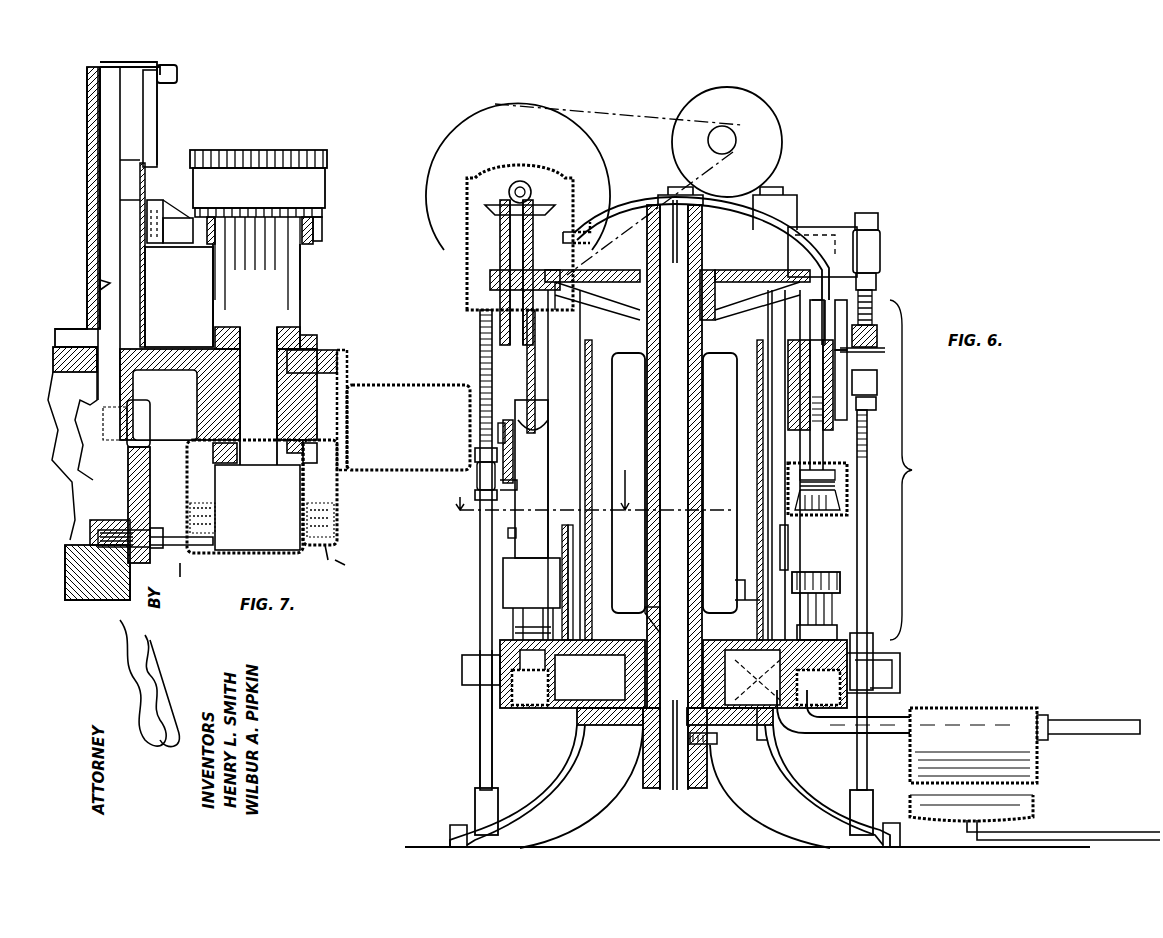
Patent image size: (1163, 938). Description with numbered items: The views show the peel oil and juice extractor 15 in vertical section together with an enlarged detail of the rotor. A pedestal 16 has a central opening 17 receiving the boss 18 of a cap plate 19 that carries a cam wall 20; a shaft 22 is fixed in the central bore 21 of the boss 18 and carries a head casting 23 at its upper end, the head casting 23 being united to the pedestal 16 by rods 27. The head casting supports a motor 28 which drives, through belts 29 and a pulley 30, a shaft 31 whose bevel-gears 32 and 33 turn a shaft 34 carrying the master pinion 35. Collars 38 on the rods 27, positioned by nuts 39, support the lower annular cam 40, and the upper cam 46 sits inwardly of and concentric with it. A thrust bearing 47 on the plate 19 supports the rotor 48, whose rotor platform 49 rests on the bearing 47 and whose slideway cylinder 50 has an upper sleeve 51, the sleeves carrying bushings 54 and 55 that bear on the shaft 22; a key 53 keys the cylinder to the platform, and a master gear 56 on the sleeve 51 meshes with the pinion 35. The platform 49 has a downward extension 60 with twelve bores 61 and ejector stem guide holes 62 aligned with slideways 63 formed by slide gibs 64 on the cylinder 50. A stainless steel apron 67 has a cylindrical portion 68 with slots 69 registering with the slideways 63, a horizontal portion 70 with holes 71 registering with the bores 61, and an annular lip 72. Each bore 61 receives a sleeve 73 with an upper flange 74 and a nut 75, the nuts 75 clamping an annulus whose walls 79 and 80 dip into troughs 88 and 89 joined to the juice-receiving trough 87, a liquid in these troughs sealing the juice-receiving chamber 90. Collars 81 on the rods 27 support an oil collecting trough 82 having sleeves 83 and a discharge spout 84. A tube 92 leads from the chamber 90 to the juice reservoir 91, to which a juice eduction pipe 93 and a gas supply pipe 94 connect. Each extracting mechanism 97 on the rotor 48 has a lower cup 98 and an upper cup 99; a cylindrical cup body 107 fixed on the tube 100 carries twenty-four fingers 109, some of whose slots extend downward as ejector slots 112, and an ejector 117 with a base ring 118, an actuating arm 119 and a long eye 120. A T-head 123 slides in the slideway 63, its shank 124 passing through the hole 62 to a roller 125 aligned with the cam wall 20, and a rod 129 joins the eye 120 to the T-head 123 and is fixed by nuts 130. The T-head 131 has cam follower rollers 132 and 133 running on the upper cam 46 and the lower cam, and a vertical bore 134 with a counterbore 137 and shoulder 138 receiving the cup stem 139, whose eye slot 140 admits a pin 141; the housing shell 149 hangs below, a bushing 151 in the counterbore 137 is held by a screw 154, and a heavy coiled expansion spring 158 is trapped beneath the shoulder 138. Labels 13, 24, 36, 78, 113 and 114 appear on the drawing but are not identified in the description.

In FIG. 6, the section line 13 is at (590, 490).
In FIG. 6, the peel oil and juice extractor 15 is at (921, 228).
In FIG. 6, the pedestal 16 is at (780, 825).
In FIG. 6, the central opening 17 is at (633, 755).
In FIG. 6, the boss 18 is at (707, 745).
In FIG. 6, the cap plate 19 is at (620, 680).
In FIG. 7, the cam wall 20 is at (128, 485).
In FIG. 6, the cam wall 20 is at (600, 690).
In FIG. 6, the central bore 21 is at (650, 785).
In FIG. 6, the shaft 22 is at (690, 512).
In FIG. 6, the head casting 23 is at (775, 230).
In FIG. 6, the mounting block 24 is at (832, 240).
In FIG. 6, the rods 27 is at (480, 606).
In FIG. 6, the motor 28 is at (768, 125).
In FIG. 6, the belts 29 is at (617, 113).
In FIG. 6, the pulley 30 is at (596, 168).
In FIG. 6, the shaft 31 is at (519, 182).
In FIG. 6, the bevel-gear 32 is at (470, 190).
In FIG. 6, the bevel-gear 33 is at (490, 213).
In FIG. 6, the shaft 34 is at (500, 255).
In FIG. 6, the master pinion 35 is at (490, 290).
In FIG. 6, the clamp 36 is at (505, 482).
In FIG. 6, the collars 38 is at (864, 382).
In FIG. 6, the nuts 39 is at (880, 362).
In FIG. 6, the lower annular cam 40 is at (862, 352).
In FIG. 6, the upper cam 46 is at (815, 328).
In FIG. 6, the thrust bearing 47 is at (635, 695).
In FIG. 6, the rotor 48 is at (738, 580).
In FIG. 7, the rotor platform 49 is at (155, 372).
In FIG. 6, the rotor platform 49 is at (600, 662).
In FIG. 7, the slideway cylinder 50 is at (84, 125).
In FIG. 6, the slideway cylinder 50 is at (752, 457).
In FIG. 6, the upper hub-like sleeve 51 is at (710, 272).
In FIG. 6, the key 53 is at (630, 640).
In FIG. 6, the bushing 54 is at (655, 360).
In FIG. 6, the bushing 55 is at (650, 605).
In FIG. 6, the master gear 56 is at (775, 270).
In FIG. 7, the annular downward extension 60 is at (210, 425).
In FIG. 6, the annular downward extension 60 is at (520, 668).
In FIG. 7, the bores 61 is at (305, 343).
In FIG. 6, the bores 61 is at (530, 650).
In FIG. 7, the ejector stem guide holes 62 is at (92, 385).
In FIG. 6, the ejector stem guide holes 62 is at (766, 660).
In FIG. 7, the slideways 63 is at (100, 283).
In FIG. 6, the slideways 63 is at (768, 540).
In FIG. 7, the slide gibs 64 is at (146, 290).
In FIG. 7, the stainless steel apron 67 is at (157, 309).
In FIG. 6, the stainless steel apron 67 is at (802, 556).
In FIG. 7, the cylindrical portion 68 is at (146, 268).
In FIG. 6, the cylindrical portion 68 is at (575, 545).
In FIG. 7, the slots 69 is at (138, 190).
In FIG. 6, the slots 69 is at (795, 548).
In FIG. 7, the horizontal portion 70 is at (215, 330).
In FIG. 7, the holes 71 is at (285, 335).
In FIG. 7, the annular lip 72 is at (345, 364).
In FIG. 6, the annular lip 72 is at (518, 660).
In FIG. 7, the sleeve 73 is at (225, 395).
In FIG. 6, the sleeve 73 is at (575, 664).
In FIG. 7, the upper flange 74 is at (222, 340).
In FIG. 7, the nut 75 is at (222, 465).
In FIG. 7, the fitting 78 is at (329, 447).
In FIG. 6, the fitting 78 is at (577, 683).
In FIG. 7, the downwardly extending wall 79 is at (200, 470).
In FIG. 7, the downwardly extending wall 80 is at (318, 458).
In FIG. 6, the collars 81 is at (475, 700).
In FIG. 7, the annular oil collecting trough 82 is at (405, 430).
In FIG. 6, the annular oil collecting trough 82 is at (898, 668).
In FIG. 6, the sleeves 83 is at (478, 675).
In FIG. 6, the discharge spout 84 is at (895, 685).
In FIG. 7, the annular juice-receiving trough 87 is at (335, 500).
In FIG. 6, the annular juice-receiving trough 87 is at (512, 700).
In FIG. 7, the trough 88 is at (200, 545).
In FIG. 7, the trough 89 is at (330, 527).
In FIG. 7, the juice-receiving chamber 90 is at (266, 511).
In FIG. 6, the juice-receiving chamber 90 is at (540, 700).
In FIG. 6, the juice reservoir 91 is at (995, 708).
In FIG. 6, the tube 92 is at (893, 738).
In FIG. 6, the juice eduction pipe 93 is at (1050, 830).
In FIG. 6, the gas supply pipe 94 is at (1090, 718).
In FIG. 6, the extracting mechanisms 97 is at (910, 470).
In FIG. 7, the lower cup 98 is at (348, 181).
In FIG. 6, the lower cup 98 is at (862, 592).
In FIG. 6, the upper cup 99 is at (862, 486).
In FIG. 7, the tube 100 is at (243, 418).
In FIG. 7, the cylindrical cup body 107 is at (305, 305).
In FIG. 7, the fingers 109 is at (295, 158).
In FIG. 7, the ejector slots 112 is at (285, 300).
In FIG. 7, the lower fin plate 113 is at (325, 205).
In FIG. 7, the ring 114 is at (318, 245).
In FIG. 7, the ejector 117 is at (336, 231).
In FIG. 7, the base ring 118 is at (312, 248).
In FIG. 7, the actuating arm 119 is at (175, 222).
In FIG. 7, the long eye 120 is at (155, 205).
In FIG. 7, the T-head 123 is at (114, 73).
In FIG. 7, the shank 124 is at (110, 222).
In FIG. 6, the shank 124 is at (590, 598).
In FIG. 7, the roller 125 is at (130, 440).
In FIG. 6, the roller 125 is at (773, 715).
In FIG. 7, the rod 129 is at (160, 160).
In FIG. 7, the nuts 130 is at (170, 83).
In FIG. 6, the T-head 131 is at (795, 385).
In FIG. 6, the cam follower roller 132 is at (828, 322).
In FIG. 6, the cam follower roller 133 is at (855, 322).
In FIG. 6, the vertical bore 134 is at (880, 370).
In FIG. 6, the counterbore 137 is at (850, 420).
In FIG. 6, the shoulder 138 is at (805, 402).
In FIG. 6, the cup stem 139 is at (505, 425).
In FIG. 6, the eye slot 140 is at (800, 365).
In FIG. 6, the pin 141 is at (780, 368).
In FIG. 6, the cylindrical housing shell 149 is at (503, 577).
In FIG. 6, the bushing 151 is at (828, 440).
In FIG. 6, the screw 154 is at (508, 533).
In FIG. 6, the heavy coiled expansion spring 158 is at (812, 420).